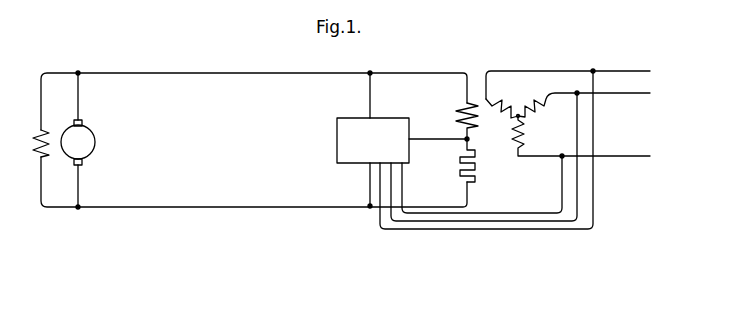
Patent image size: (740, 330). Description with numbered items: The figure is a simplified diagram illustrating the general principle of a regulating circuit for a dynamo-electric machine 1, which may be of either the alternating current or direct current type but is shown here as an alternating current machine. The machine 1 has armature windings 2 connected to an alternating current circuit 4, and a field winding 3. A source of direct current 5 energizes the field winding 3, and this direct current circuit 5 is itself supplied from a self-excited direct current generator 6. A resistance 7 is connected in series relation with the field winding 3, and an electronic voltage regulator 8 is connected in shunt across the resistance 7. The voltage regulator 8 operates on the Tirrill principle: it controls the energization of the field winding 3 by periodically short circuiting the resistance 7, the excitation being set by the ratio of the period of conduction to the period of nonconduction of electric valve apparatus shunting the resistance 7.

The dynamo-electric machine 1 is at (539, 113).
The armature windings 2 is at (537, 101).
The field winding 3 is at (456, 113).
The alternating current circuit 4 is at (626, 72).
The source of direct current 5 is at (208, 74).
The self-excited direct current generator 6 is at (64, 126).
The resistance 7 is at (460, 169).
The electronic voltage regulator 8 is at (336, 137).